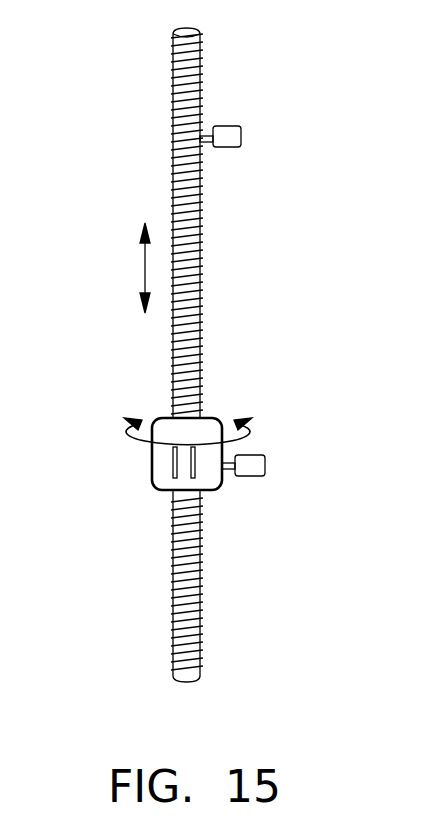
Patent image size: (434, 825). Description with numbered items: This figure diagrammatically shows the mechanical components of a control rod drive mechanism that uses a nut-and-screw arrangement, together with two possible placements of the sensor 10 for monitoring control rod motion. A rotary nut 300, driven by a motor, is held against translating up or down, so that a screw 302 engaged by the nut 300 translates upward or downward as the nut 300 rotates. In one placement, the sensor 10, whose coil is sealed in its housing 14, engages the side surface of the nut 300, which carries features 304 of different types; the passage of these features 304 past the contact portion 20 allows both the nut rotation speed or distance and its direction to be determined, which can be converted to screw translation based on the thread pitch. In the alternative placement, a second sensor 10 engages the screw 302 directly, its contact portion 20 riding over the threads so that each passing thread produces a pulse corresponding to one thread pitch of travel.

The sensor 10 is at (291, 343).
The housing 14 is at (232, 125).
The contact portion 20 is at (207, 143).
The rotary nut 300 is at (151, 467).
The screw 302 is at (173, 106).
The features 304 is at (177, 456).